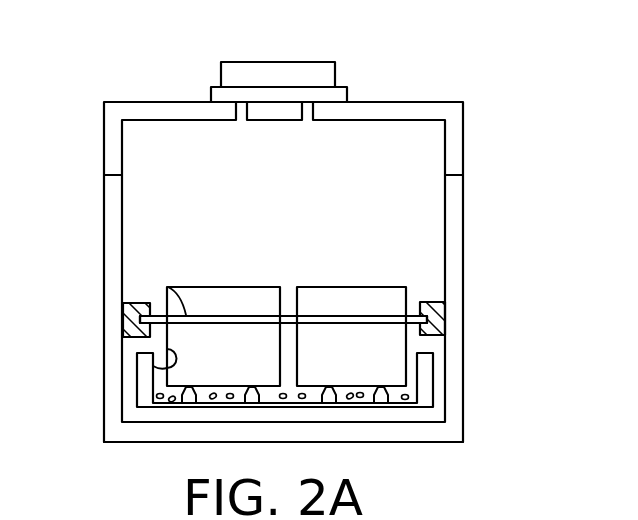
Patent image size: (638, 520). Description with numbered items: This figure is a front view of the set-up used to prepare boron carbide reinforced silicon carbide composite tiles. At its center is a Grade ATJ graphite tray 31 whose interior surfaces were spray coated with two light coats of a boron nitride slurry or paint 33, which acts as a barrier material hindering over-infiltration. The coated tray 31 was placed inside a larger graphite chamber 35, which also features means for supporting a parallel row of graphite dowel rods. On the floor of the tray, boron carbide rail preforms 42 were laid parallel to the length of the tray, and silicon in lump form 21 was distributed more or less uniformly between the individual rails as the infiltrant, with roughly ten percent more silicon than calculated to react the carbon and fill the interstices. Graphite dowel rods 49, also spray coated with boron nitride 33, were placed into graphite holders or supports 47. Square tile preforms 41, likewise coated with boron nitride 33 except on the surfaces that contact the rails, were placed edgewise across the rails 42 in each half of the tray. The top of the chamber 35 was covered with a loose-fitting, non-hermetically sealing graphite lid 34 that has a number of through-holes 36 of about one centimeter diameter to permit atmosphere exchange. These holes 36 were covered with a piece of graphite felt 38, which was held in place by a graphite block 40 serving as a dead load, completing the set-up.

The silicon in lump form 21 is at (409, 397).
The graphite tray 31 is at (143, 381).
The boron nitride paint 33 is at (250, 278).
The graphite lid 34 is at (113, 110).
The graphite chamber 35 is at (117, 425).
The through-holes 36 is at (304, 116).
The graphite felt 38 is at (212, 97).
The graphite block 40 is at (258, 68).
The tile preforms 41 is at (215, 297).
The boron carbide rail preforms 42 is at (328, 389).
The graphite holders 47 is at (438, 319).
The graphite dowel rods 49 is at (168, 287).